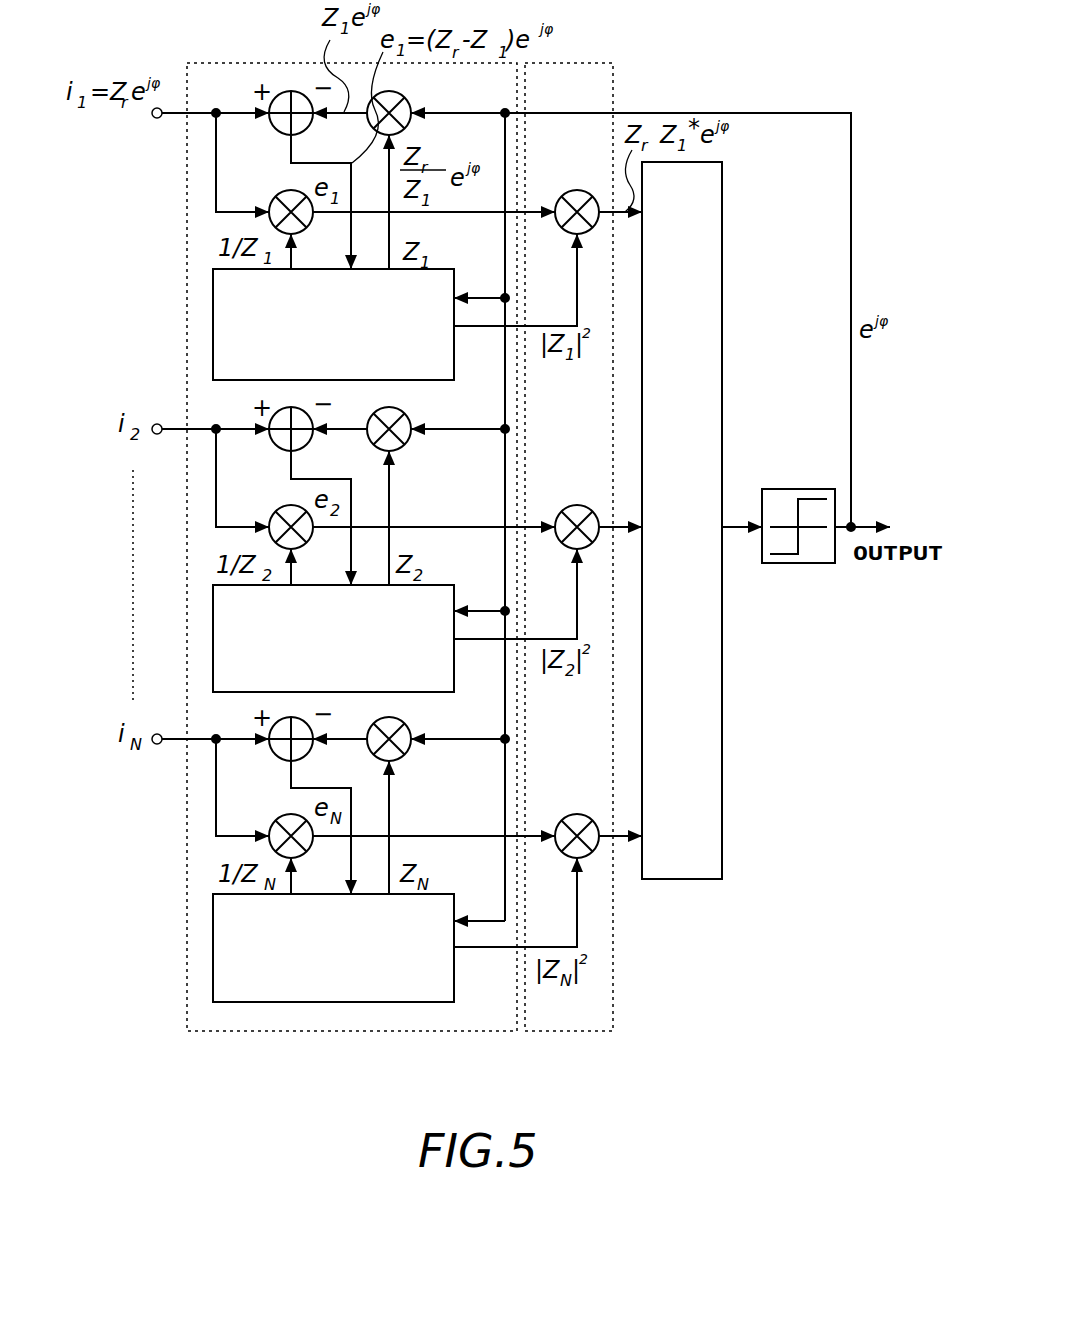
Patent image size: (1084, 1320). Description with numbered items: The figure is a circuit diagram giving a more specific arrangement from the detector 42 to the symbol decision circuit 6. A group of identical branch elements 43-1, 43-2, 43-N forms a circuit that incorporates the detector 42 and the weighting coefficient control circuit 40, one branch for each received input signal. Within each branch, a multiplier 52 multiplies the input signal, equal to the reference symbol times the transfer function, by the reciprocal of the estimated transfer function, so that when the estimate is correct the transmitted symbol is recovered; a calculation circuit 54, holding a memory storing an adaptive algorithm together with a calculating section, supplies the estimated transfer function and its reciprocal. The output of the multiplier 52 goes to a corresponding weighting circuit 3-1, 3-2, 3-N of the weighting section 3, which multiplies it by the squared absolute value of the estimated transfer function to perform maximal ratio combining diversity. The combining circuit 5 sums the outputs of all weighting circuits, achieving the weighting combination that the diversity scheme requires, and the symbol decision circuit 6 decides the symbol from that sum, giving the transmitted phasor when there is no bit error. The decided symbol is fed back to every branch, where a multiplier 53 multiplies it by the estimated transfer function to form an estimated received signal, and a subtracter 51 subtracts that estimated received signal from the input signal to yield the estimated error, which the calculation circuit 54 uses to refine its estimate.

The subtracter 51 is at (291, 91).
The multiplier 52 is at (276, 196).
The multiplier 53 is at (404, 129).
The calculation circuit 54 is at (213, 318).
The first element of circuit incorporating detector and weighting coefficient contro 43-1 is at (203, 213).
The second element of circuit incorporating detector and weighting coefficient contr 43-2 is at (203, 488).
The N-th element of circuit incorporating detector and weighting coefficient control 43-N is at (203, 770).
The weighting circuit 3-1 is at (577, 190).
The weighting circuit 3-2 is at (574, 505).
The weighting circuit 3-N is at (572, 814).
The weighting circuit 3 is at (613, 960).
The combining circuit 5 is at (722, 224).
The symbol decision circuit 6 is at (797, 489).
The detector 42 is at (352, 585).
The weighting coefficient control circuit 40 is at (302, 1031).